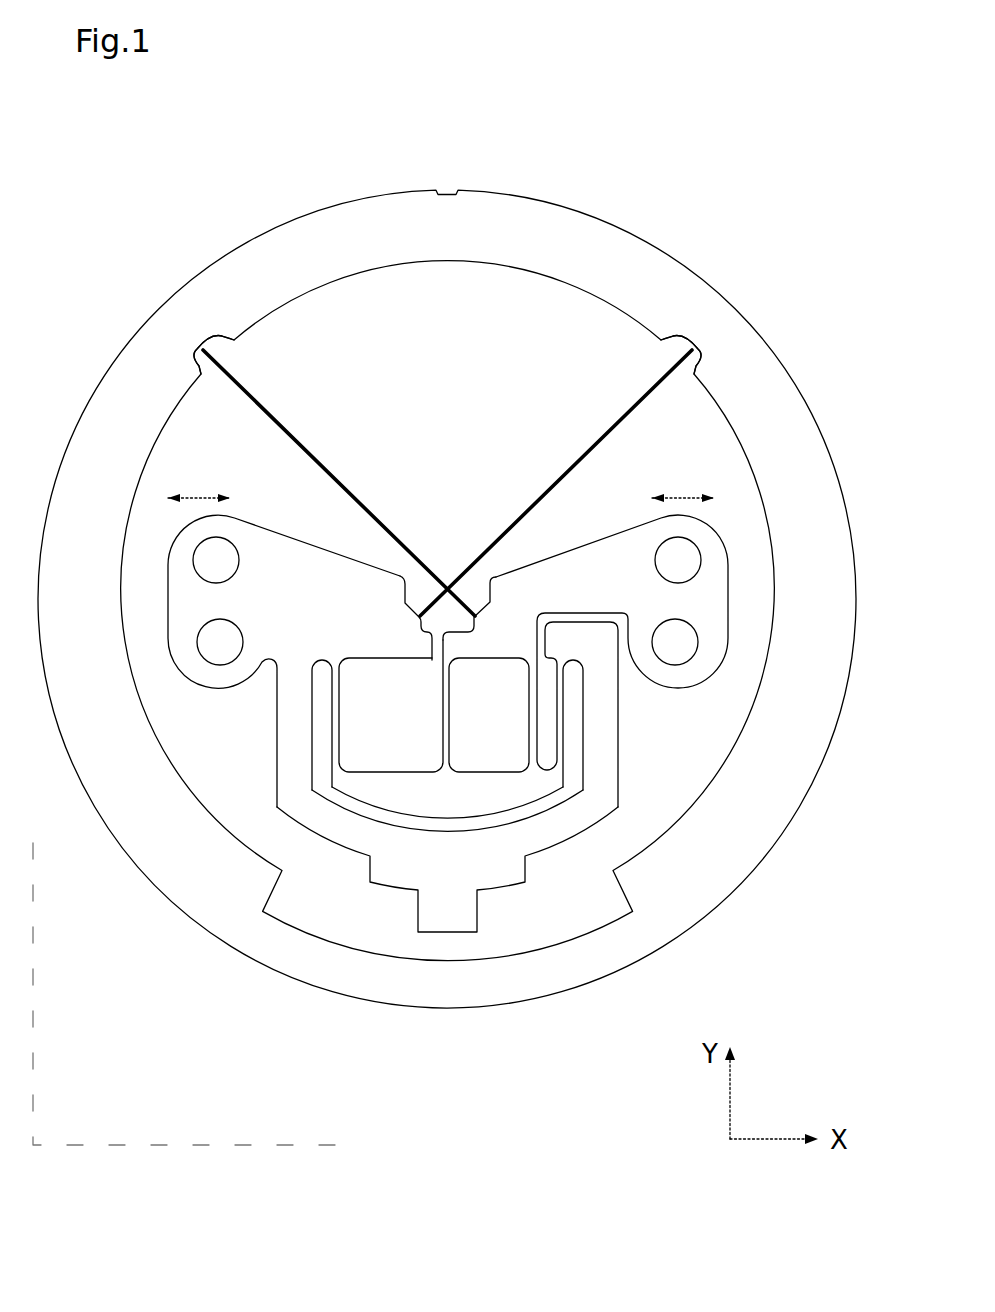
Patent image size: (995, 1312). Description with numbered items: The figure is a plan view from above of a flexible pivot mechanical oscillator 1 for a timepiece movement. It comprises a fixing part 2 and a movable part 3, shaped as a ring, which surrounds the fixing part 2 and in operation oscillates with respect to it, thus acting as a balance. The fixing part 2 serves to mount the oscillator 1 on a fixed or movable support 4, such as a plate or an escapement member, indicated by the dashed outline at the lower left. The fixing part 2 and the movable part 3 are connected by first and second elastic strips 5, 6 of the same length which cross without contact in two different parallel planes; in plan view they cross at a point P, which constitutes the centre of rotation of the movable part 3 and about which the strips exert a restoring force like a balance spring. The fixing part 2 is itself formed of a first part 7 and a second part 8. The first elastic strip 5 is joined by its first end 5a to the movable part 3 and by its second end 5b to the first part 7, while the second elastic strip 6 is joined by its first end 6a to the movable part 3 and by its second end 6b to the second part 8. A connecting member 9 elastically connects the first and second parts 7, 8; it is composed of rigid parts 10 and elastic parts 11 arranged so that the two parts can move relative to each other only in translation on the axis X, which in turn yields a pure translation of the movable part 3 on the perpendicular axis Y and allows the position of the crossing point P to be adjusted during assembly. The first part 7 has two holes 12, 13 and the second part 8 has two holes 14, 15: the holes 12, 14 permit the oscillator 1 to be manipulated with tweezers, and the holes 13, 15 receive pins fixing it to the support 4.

The flexible pivot mechanical oscillator 1 is at (732, 187).
The fixing part 2 is at (675, 690).
The movable part 3 is at (186, 294).
The fixed or movable support 4 is at (124, 1147).
The first elastic strip 5 is at (572, 468).
The second elastic strip 6 is at (328, 470).
The first end of first elastic strip 5a is at (683, 346).
The first end of second elastic strip 6a is at (212, 346).
The second end of first elastic strip 5b is at (408, 613).
The second end of second elastic strip 6b is at (490, 614).
The first part 7 is at (271, 543).
The second part 8 is at (623, 538).
The connecting member 9 is at (555, 848).
The rigid parts 10 is at (378, 797).
The elastic parts 11 is at (442, 715).
The hole 12 is at (226, 643).
The hole 13 is at (228, 563).
The hole 14 is at (668, 641).
The hole 15 is at (670, 560).
The crossing point P is at (447, 584).